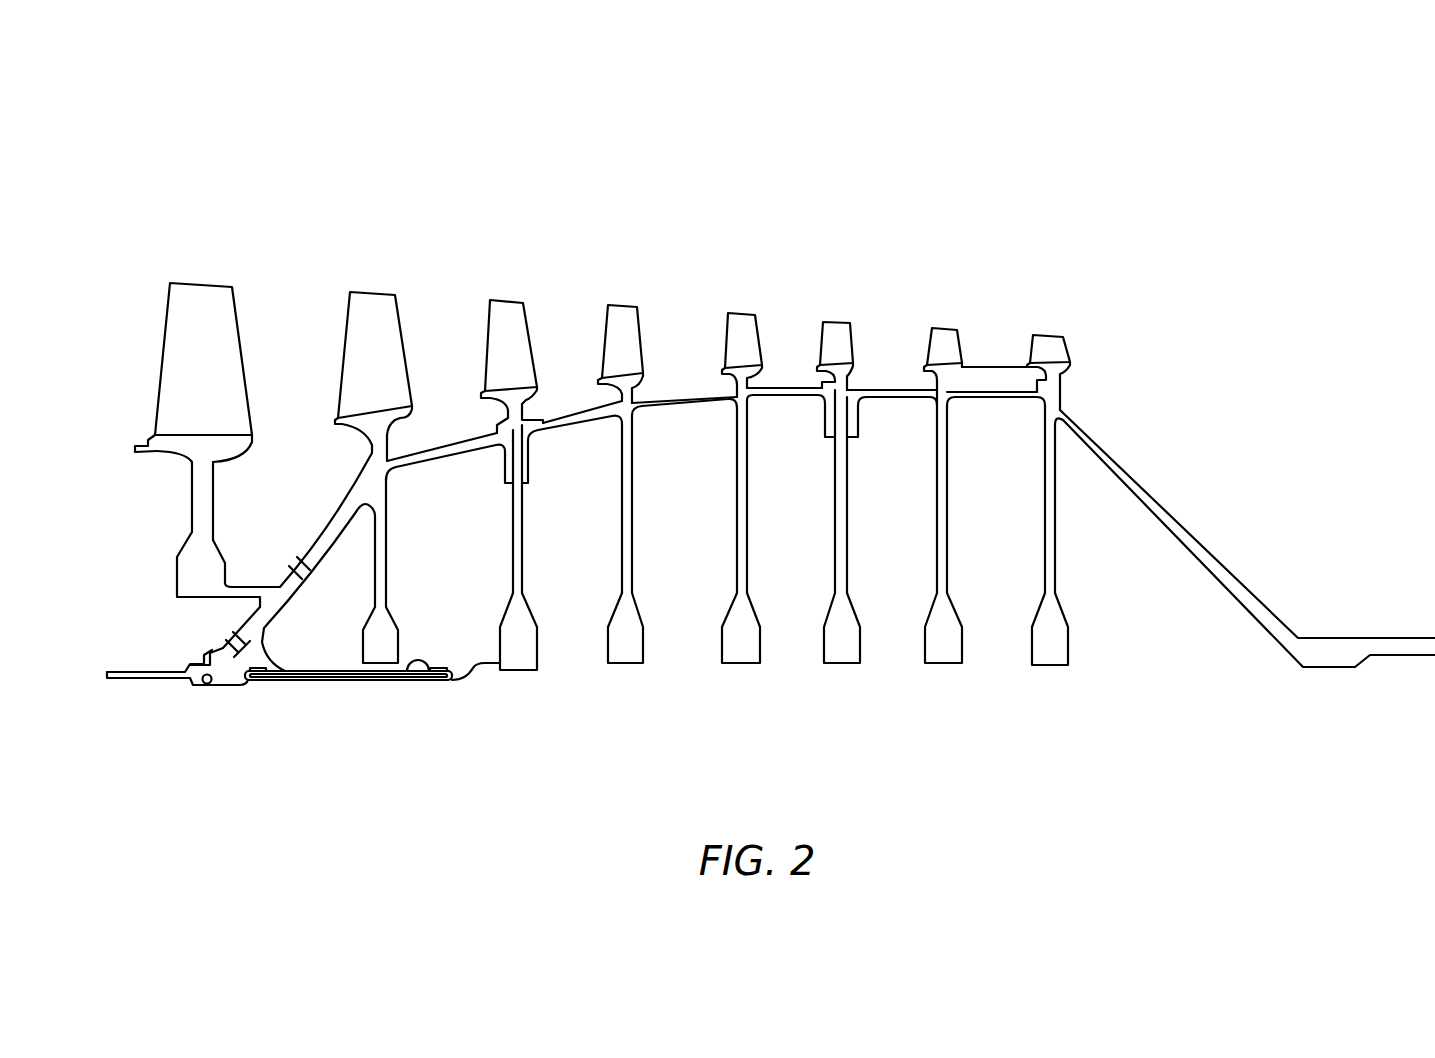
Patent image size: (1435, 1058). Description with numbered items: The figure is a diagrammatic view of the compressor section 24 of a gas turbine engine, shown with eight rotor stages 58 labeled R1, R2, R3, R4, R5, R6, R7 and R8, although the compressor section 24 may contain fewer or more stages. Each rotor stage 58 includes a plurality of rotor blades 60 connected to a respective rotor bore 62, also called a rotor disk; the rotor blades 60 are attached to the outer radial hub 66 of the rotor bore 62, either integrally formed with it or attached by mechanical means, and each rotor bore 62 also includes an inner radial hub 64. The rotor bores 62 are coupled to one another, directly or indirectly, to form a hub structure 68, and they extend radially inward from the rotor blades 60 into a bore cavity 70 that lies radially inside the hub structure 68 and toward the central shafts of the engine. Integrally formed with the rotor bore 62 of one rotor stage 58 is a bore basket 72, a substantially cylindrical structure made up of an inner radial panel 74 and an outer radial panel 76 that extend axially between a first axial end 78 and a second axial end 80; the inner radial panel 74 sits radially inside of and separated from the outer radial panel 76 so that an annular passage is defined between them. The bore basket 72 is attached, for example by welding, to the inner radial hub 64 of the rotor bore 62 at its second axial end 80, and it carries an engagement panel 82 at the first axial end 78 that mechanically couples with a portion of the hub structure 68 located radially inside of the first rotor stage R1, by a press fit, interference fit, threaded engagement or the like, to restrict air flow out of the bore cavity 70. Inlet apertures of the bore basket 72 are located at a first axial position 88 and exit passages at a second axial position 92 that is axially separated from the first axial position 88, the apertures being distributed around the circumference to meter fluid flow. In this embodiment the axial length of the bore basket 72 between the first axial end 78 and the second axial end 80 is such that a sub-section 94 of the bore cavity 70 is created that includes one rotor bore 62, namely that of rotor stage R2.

The compressor section 24 is at (1014, 147).
The first rotor stage R1 is at (207, 249).
The second rotor stage R2 is at (373, 257).
The third rotor stage R3 is at (509, 270).
The fourth rotor stage R4 is at (620, 270).
The fifth rotor stage R5 is at (742, 285).
The sixth rotor stage R6 is at (847, 283).
The seventh rotor stage R7 is at (950, 292).
The eighth rotor stage R8 is at (1052, 305).
The rotor stage 58 is at (392, 577).
The rotor blades 60 is at (189, 392).
The rotor bore 62 is at (200, 502).
The inner radial hub 64 is at (187, 577).
The outer radial hub 66 is at (187, 453).
The hub structure 68 is at (893, 378).
The bore cavity 70 is at (800, 535).
The bore basket 72 is at (357, 698).
The inner radial panel 74 is at (283, 688).
The outer radial panel 76 is at (425, 683).
The first axial end 78 is at (195, 690).
The second axial end 80 is at (482, 686).
The engagement panel 82 is at (215, 688).
The first axial position 88 is at (458, 690).
The second axial position 92 is at (257, 688).
The sub-section of the bore cavity 94 is at (343, 623).